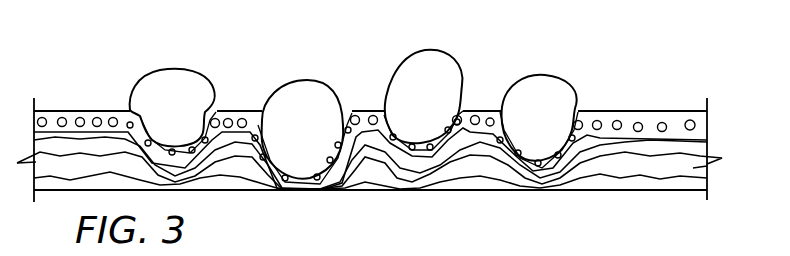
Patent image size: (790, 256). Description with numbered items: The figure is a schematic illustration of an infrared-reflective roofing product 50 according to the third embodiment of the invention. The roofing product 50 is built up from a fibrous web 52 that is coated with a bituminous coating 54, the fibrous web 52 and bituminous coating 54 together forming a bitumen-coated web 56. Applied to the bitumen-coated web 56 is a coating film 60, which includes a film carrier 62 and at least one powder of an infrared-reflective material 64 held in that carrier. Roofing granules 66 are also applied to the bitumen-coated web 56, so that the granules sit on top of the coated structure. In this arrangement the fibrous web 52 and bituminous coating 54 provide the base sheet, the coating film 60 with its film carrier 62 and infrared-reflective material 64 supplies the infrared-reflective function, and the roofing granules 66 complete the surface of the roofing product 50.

The infrared-reflective roofing product 50 is at (632, 33).
The fibrous web 52 is at (707, 167).
The bituminous coating 54 is at (502, 182).
The bitumen-coated web 56 is at (613, 192).
The coating film 60 is at (605, 112).
The film carrier 62 is at (481, 113).
The infrared-reflective material 64 is at (366, 117).
The roofing granules 66 is at (353, 114).